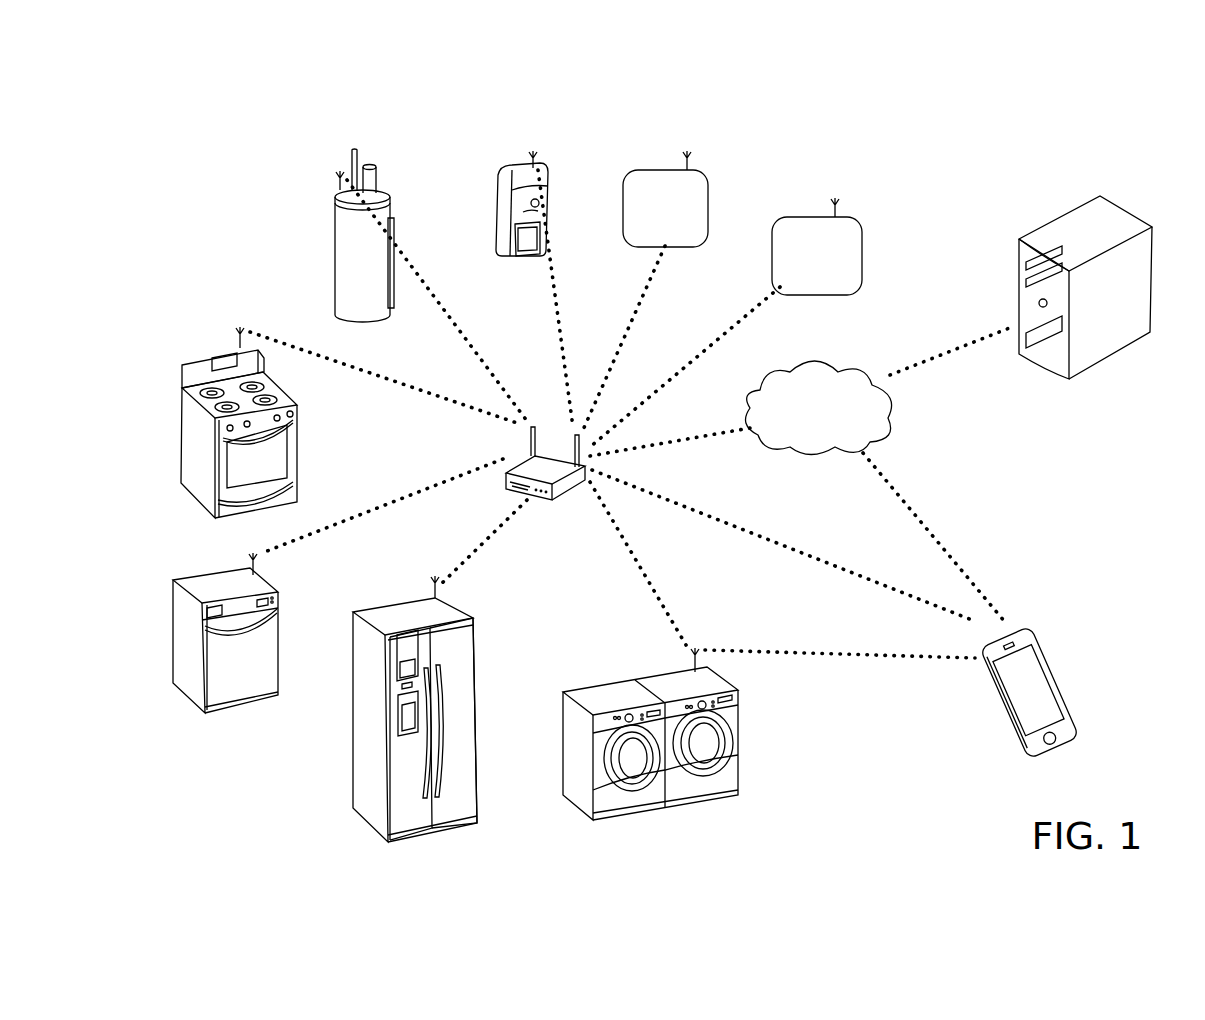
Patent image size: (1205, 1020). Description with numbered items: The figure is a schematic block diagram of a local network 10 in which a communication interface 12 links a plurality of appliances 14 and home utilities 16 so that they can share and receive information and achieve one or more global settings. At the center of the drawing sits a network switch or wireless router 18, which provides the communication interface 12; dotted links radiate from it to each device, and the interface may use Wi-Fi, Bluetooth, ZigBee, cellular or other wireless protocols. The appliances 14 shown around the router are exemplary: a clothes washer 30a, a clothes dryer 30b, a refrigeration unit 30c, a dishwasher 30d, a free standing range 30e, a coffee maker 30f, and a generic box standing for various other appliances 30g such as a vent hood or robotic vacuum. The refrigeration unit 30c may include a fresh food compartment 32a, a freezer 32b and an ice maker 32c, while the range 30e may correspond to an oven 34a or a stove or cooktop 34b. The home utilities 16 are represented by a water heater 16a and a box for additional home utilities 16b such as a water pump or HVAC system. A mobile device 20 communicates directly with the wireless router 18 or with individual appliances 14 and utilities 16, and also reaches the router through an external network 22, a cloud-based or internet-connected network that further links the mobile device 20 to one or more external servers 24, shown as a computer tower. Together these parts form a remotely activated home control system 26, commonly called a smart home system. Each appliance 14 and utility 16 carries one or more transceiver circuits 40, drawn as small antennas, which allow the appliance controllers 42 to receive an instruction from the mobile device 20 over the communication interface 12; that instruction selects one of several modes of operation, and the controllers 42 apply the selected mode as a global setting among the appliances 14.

The local network 10 is at (812, 122).
The communication interface 12 is at (466, 327).
The appliances 14 is at (340, 304).
The home utilities 16 is at (848, 256).
The water heater 16a is at (340, 236).
The additional home utilities 16b is at (855, 241).
The wireless router 18 is at (557, 497).
The mobile device 20 is at (1043, 678).
The external network 22 is at (866, 362).
The external servers 24 is at (1140, 291).
The home control system 26 is at (938, 436).
The clothes washer 30a is at (730, 780).
The clothes dryer 30b is at (607, 806).
The refrigeration unit 30c is at (408, 703).
The dishwasher 30d is at (176, 600).
The free standing range 30e is at (235, 434).
The coffee maker 30f is at (500, 200).
The other appliances 30g is at (628, 240).
The fresh food compartment 32a is at (452, 812).
The freezer 32b is at (398, 787).
The ice maker 32c is at (398, 706).
The oven 34a is at (292, 446).
The cooktop 34b is at (275, 385).
The transceiver circuits 40 is at (336, 180).
The appliance controllers 42 is at (215, 366).